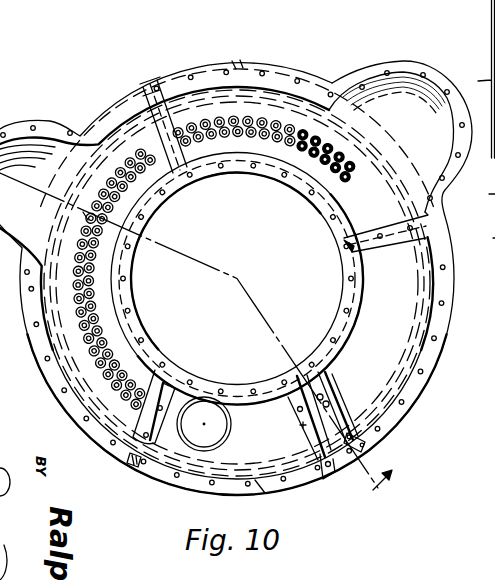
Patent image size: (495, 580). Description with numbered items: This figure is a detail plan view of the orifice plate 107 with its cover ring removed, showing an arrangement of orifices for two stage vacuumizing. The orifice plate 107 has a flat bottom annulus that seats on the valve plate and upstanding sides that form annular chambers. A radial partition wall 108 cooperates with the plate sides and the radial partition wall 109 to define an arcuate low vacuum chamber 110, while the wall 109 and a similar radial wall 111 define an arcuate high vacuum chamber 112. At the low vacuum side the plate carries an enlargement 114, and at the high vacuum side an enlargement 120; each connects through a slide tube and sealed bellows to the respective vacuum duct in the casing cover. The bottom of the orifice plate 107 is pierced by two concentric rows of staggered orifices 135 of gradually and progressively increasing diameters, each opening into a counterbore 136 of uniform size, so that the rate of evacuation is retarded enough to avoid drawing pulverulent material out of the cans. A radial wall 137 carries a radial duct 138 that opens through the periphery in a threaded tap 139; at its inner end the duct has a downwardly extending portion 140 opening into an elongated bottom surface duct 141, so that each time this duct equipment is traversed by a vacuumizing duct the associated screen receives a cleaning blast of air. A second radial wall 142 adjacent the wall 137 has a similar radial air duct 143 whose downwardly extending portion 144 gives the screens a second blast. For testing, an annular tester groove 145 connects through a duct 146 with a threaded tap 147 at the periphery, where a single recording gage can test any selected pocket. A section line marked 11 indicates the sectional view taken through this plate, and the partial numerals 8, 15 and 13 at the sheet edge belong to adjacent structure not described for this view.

The orifice plate 107 is at (437, 373).
The low vacuum chamber 110 is at (123, 417).
The high vacuum chamber 112 is at (361, 220).
The enlargement 114 is at (23, 122).
The enlargement 120 is at (424, 50).
The radial partition wall 109 is at (167, 119).
The radial partition wall 108 is at (177, 393).
The radial wall 111 is at (415, 245).
The orifices 135 is at (268, 128).
The counterbore 136 is at (230, 119).
The duct 146 is at (146, 448).
The annular tester groove 145 is at (238, 64).
The threaded tap 147 is at (130, 466).
The downwardly extending portion 144 is at (300, 411).
The radial air duct 143 is at (300, 428).
The second radial wall 142 is at (305, 442).
The elongated bottom surface duct 141 is at (325, 392).
The downwardly extending portion 140 is at (324, 398).
The radial duct 138 is at (330, 403).
The radial wall 137 is at (323, 480).
The threaded tap 139 is at (370, 446).
The section line 11- 11 is at (204, 333).
The element 8 is at (479, 79).
The element 15 is at (482, 188).
The element 13 is at (488, 238).